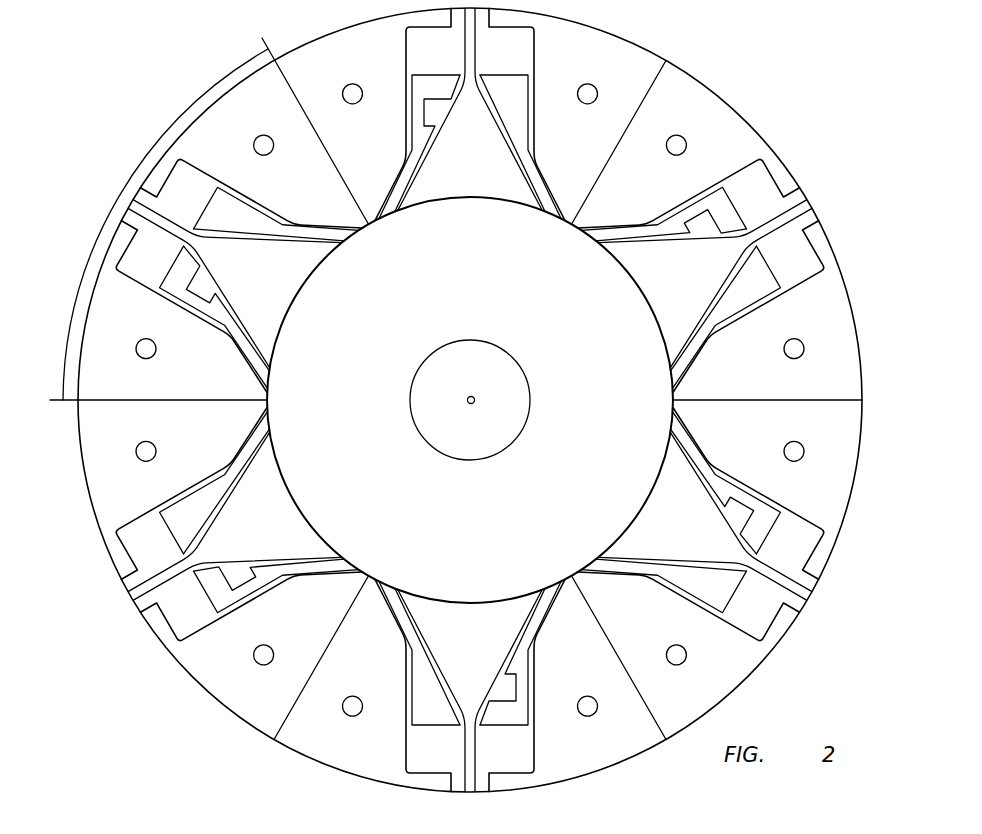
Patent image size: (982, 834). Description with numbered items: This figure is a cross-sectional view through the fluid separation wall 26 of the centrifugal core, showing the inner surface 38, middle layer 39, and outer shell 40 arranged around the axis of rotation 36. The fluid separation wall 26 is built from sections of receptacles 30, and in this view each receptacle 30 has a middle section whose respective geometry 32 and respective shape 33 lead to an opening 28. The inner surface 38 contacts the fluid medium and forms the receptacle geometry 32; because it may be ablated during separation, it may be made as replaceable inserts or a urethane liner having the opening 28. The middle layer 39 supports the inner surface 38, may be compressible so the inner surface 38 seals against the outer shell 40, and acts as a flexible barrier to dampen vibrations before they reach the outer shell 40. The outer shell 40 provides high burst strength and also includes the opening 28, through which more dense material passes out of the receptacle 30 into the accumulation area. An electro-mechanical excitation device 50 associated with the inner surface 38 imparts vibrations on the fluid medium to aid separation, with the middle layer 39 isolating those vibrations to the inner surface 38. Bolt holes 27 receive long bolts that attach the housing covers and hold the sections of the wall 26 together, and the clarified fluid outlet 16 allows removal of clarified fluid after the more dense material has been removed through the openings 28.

The clarified fluid outlet 16 is at (446, 344).
The fluid separation wall 26 is at (167, 683).
The bolt holes 27 is at (356, 88).
The opening 28 is at (137, 598).
The receptacle 30 is at (115, 211).
The respective geometry 32 is at (283, 297).
The respective shape 33 is at (474, 208).
The axis of rotation 36 is at (475, 400).
The inner surface 38 is at (252, 470).
The middle layer 39 is at (197, 505).
The outer shell 40 is at (88, 488).
The electro-mechanical excitation device 50 is at (247, 575).